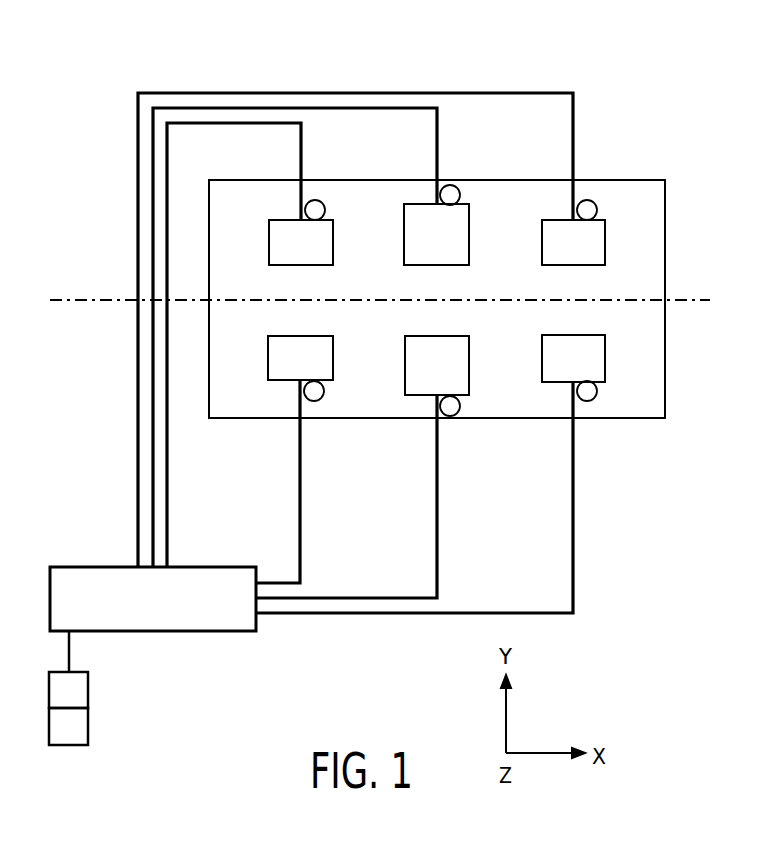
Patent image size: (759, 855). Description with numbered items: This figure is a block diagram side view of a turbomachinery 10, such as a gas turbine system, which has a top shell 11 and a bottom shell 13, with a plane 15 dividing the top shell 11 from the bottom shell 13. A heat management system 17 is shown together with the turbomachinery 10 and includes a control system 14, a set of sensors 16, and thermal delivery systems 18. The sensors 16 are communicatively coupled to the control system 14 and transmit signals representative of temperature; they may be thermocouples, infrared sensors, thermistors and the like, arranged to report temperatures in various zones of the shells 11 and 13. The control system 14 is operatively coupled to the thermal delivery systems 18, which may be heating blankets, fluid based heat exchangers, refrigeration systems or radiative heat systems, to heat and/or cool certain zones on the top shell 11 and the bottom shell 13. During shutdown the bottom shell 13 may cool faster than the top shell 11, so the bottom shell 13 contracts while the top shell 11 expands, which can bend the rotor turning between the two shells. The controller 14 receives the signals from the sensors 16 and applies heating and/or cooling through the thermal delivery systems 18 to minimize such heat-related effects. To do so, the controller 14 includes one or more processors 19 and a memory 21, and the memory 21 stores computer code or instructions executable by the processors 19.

The turbomachinery 10 is at (155, 72).
The top shell 11 is at (251, 228).
The bottom shell 13 is at (251, 400).
The control system 14 is at (155, 631).
The plane 15 is at (698, 300).
The sensors 16 is at (323, 201).
The heat management system 17 is at (115, 545).
The thermal delivery systems 18 is at (313, 254).
The processors 19 is at (88, 692).
The memory 21 is at (88, 728).